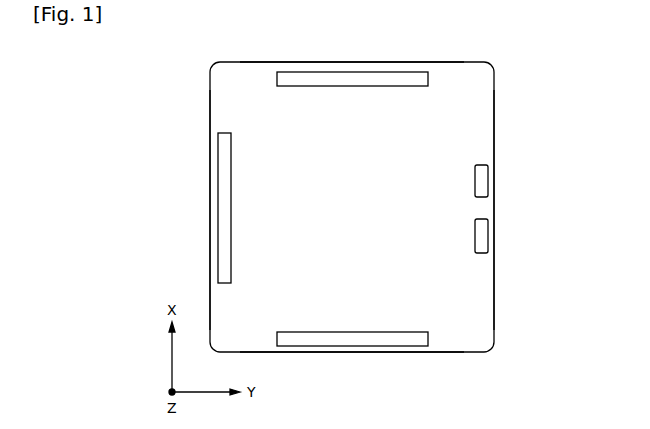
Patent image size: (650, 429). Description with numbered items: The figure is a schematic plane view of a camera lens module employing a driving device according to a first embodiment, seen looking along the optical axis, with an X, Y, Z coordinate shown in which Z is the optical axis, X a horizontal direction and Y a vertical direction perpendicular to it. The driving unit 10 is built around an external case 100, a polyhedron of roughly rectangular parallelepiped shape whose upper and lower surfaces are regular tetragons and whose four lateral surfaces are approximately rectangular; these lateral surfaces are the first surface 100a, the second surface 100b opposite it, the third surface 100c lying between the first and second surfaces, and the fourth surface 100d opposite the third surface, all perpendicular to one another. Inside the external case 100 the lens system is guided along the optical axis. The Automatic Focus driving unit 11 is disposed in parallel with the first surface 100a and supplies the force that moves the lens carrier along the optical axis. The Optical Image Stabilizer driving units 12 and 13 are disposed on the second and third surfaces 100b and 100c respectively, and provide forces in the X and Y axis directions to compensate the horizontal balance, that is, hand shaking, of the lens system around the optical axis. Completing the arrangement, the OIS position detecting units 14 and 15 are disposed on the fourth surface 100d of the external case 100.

The driving unit 10 is at (160, 23).
The external case 100 is at (500, 107).
The first surface 100a is at (352, 61).
The second surface 100b is at (352, 354).
The third surface 100c is at (208, 234).
The fourth surface 100d is at (498, 276).
The Automatic Focus driving unit 11 is at (395, 77).
The Optical Image Stabilizer driving unit 12 is at (399, 344).
The Optical Image Stabilizer driving unit 13 is at (225, 183).
The OIS position detecting unit 14 is at (488, 178).
The OIS position detecting unit 15 is at (488, 232).